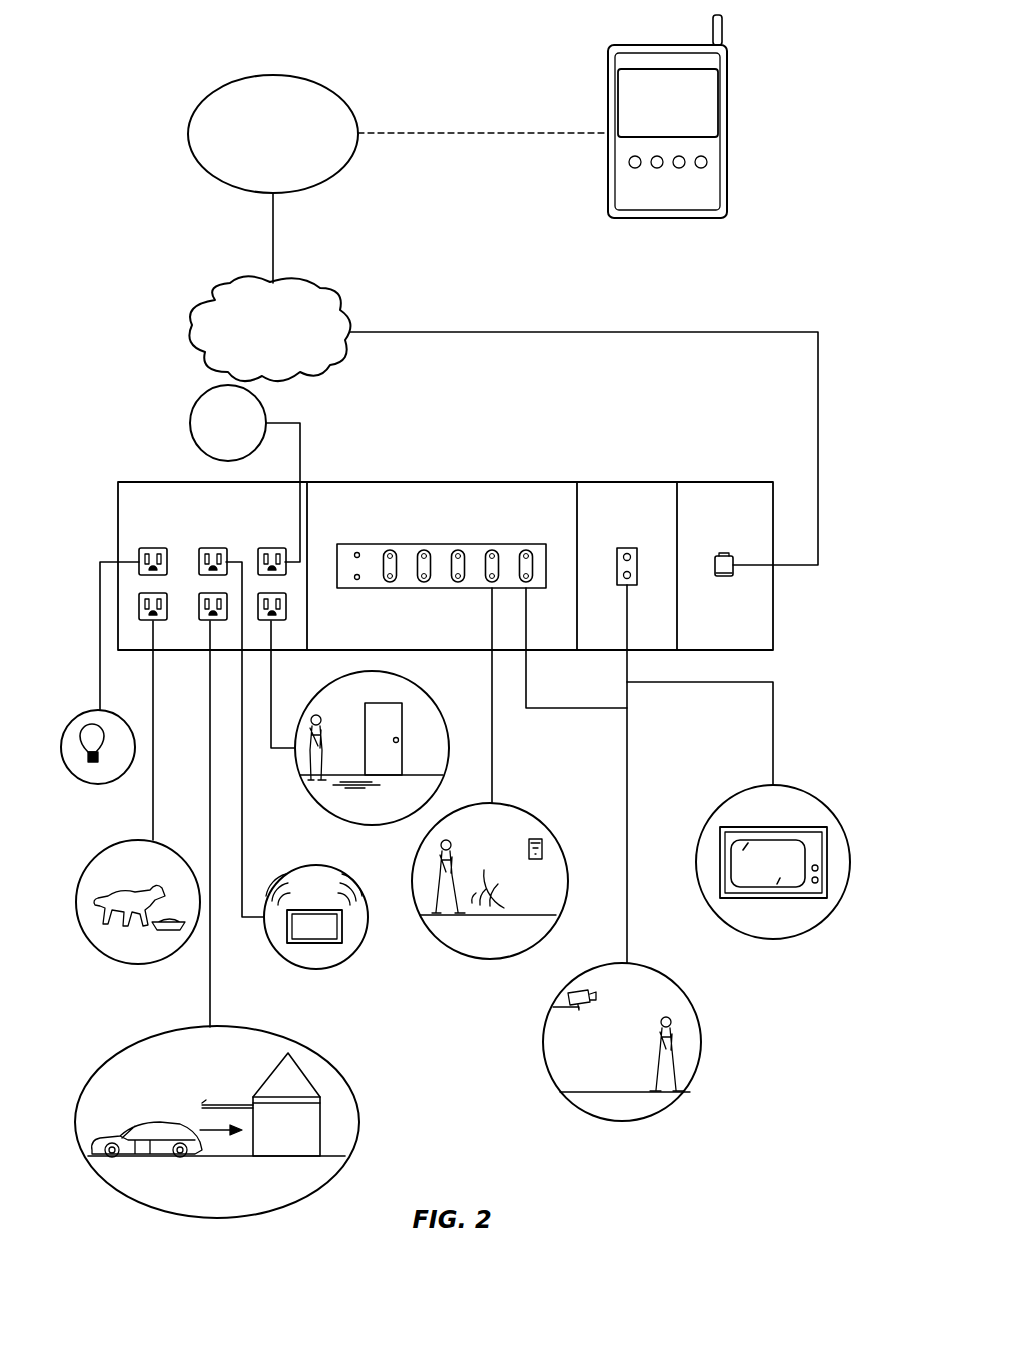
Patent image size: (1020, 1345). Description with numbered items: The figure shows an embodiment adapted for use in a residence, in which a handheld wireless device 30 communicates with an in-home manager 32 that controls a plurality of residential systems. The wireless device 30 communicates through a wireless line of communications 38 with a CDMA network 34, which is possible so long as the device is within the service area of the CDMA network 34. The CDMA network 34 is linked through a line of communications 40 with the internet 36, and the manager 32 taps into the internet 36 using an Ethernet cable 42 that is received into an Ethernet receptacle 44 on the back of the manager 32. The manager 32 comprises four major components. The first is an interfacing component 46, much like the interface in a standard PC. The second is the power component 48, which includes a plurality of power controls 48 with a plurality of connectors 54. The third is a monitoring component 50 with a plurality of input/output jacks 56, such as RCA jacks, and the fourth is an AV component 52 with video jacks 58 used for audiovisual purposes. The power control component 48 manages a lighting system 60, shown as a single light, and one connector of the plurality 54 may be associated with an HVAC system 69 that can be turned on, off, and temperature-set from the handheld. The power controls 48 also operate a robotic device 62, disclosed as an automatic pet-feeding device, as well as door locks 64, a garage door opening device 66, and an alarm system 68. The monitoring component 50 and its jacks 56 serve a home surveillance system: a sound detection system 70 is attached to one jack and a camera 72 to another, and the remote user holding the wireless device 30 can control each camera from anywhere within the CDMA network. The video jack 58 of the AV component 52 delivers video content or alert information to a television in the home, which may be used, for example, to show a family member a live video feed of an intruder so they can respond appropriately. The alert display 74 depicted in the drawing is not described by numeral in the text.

The wireless device 30 is at (727, 90).
The in-home manager 32 is at (500, 426).
The CDMA network 34 is at (273, 76).
The internet 36 is at (230, 290).
The wireless line of communications 38 is at (502, 133).
The line of communications 40 is at (273, 233).
The Ethernet cable 42 is at (627, 332).
The Ethernet receptacle 44 is at (724, 578).
The interfacing component 46 is at (718, 482).
The power component 48 is at (158, 482).
The monitoring component 50 is at (362, 482).
The AV component 52 is at (596, 482).
The plurality of connectors 54 is at (206, 548).
The input/output jacks 56 is at (405, 588).
The video jacks 58 is at (617, 570).
The lighting system 60 is at (90, 712).
The robotic device 62 is at (118, 844).
The door locks 64 is at (321, 686).
The garage door opening device 66 is at (180, 1030).
The alarm system 68 is at (313, 866).
The HVAC system 69 is at (190, 423).
The sound detection system 70 is at (525, 806).
The cameras 72 is at (660, 966).
The alert display 74 is at (813, 790).